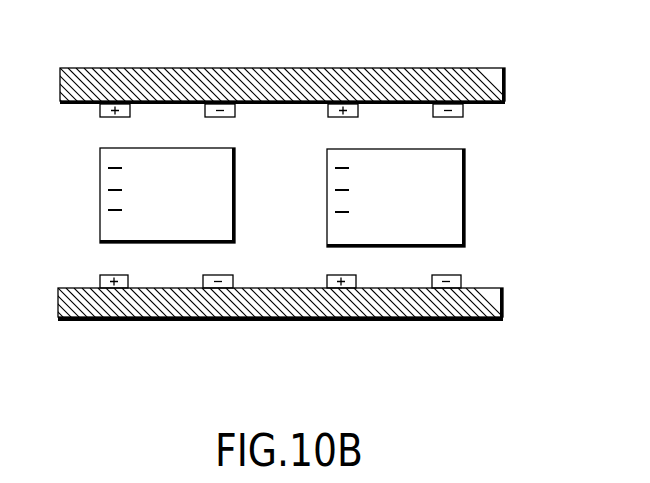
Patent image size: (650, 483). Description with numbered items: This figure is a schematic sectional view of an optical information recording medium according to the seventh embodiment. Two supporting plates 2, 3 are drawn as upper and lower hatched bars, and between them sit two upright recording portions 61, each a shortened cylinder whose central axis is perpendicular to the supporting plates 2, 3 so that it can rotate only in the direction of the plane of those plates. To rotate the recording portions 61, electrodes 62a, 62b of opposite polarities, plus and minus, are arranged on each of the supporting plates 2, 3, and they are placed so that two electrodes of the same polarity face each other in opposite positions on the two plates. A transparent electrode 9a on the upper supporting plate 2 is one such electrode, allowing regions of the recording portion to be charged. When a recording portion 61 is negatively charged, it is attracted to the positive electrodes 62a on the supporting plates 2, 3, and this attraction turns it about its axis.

The supporting plate 2 is at (453, 70).
The transparent electrode 9a is at (233, 112).
The recording portion 61 is at (467, 193).
The supporting plate 3 is at (156, 310).
The electrode 62a is at (103, 282).
The electrode 62b is at (225, 282).